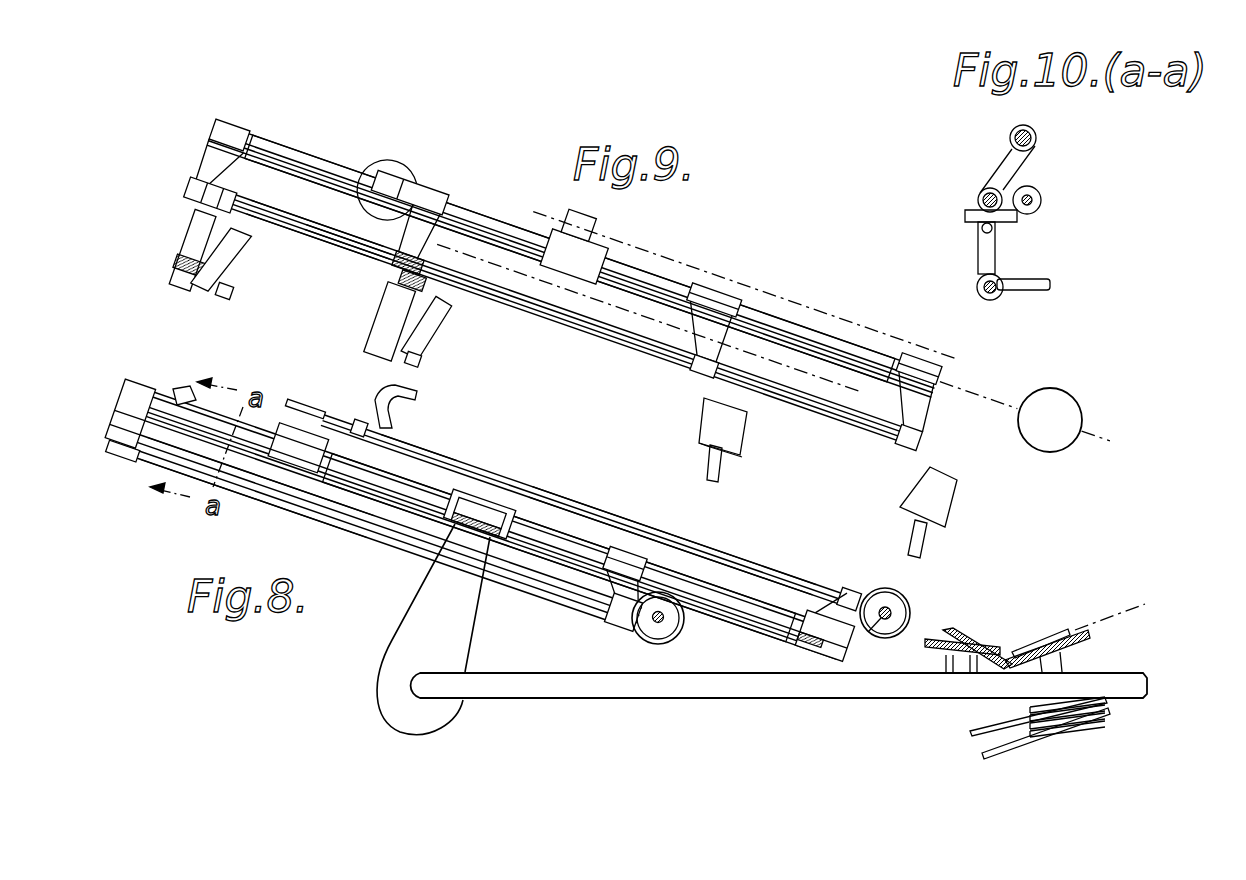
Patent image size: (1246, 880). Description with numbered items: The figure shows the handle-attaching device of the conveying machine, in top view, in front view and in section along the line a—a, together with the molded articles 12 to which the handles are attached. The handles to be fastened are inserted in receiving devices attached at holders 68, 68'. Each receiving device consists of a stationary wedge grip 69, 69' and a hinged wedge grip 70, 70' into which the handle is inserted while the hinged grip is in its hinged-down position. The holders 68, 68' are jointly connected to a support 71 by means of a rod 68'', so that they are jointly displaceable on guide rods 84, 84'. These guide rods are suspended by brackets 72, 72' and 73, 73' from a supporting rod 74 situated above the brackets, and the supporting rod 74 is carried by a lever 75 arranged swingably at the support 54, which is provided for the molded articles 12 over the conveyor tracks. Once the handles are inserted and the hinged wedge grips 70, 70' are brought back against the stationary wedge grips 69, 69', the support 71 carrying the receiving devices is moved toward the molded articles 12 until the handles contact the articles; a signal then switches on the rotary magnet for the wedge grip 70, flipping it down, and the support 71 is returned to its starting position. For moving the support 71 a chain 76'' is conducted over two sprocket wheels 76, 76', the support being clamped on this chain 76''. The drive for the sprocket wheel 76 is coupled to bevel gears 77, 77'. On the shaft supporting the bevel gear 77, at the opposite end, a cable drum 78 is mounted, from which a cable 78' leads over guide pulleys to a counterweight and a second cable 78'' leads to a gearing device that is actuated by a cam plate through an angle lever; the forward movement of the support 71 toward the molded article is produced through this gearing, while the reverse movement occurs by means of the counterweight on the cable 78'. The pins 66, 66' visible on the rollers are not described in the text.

In FIG. 8, the molded articles 12 is at (668, 632).
In FIG. 9, the molded articles 12 is at (714, 420).
In FIG. 8, the support 54 is at (633, 686).
In FIG. 8, the roller pin 66 is at (632, 641).
In FIG. 9, the roller pin 66 is at (733, 470).
In FIG. 8, the roller pin 66' is at (923, 576).
In FIG. 9, the holder 68 is at (177, 271).
In FIG. 10, the holder 68 is at (1018, 272).
In FIG. 8, the holder 68' is at (354, 395).
In FIG. 9, the holder 68' is at (377, 326).
In FIG. 8, the rod 68'' is at (105, 471).
In FIG. 9, the rod 68'' is at (315, 248).
In FIG. 10, the rod 68'' is at (1042, 212).
In FIG. 8, the stationary wedge grip 69 is at (177, 479).
In FIG. 9, the stationary wedge grip 69 is at (241, 260).
In FIG. 10, the stationary wedge grip 69 is at (963, 248).
In FIG. 8, the stationary wedge grip 69' is at (422, 444).
In FIG. 9, the stationary wedge grip 69' is at (451, 327).
In FIG. 8, the hinged wedge grip 70 is at (168, 373).
In FIG. 9, the hinged wedge grip 70 is at (686, 367).
In FIG. 10, the hinged wedge grip 70 is at (1049, 284).
In FIG. 8, the hinged wedge grip 70' is at (414, 406).
In FIG. 9, the hinged wedge grip 70' is at (452, 367).
In FIG. 9, the support 71 is at (237, 195).
In FIG. 10, the support 71 is at (1030, 197).
In FIG. 8, the bracket 72 is at (104, 413).
In FIG. 9, the bracket 72 is at (239, 136).
In FIG. 10, the bracket 72 is at (990, 167).
In FIG. 8, the bracket 72' is at (635, 560).
In FIG. 9, the bracket 72' is at (751, 322).
In FIG. 8, the bracket 73 is at (298, 485).
In FIG. 9, the bracket 73 is at (436, 203).
In FIG. 8, the bracket 73' is at (841, 638).
In FIG. 9, the bracket 73' is at (930, 380).
In FIG. 8, the supporting rod 74 is at (757, 615).
In FIG. 9, the supporting rod 74 is at (522, 240).
In FIG. 10, the supporting rod 74 is at (1036, 138).
In FIG. 8, the lever 75 is at (410, 645).
In FIG. 9, the lever 75 is at (587, 253).
In FIG. 8, the sprocket wheel 76 is at (968, 629).
In FIG. 8, the sprocket wheel 76' is at (296, 383).
In FIG. 9, the sprocket wheel 76' is at (395, 167).
In FIG. 8, the chain 76'' is at (758, 540).
In FIG. 9, the chain 76'' is at (745, 286).
In FIG. 8, the bevel gear 77 is at (1045, 636).
In FIG. 8, the bevel gear 77' is at (955, 691).
In FIG. 8, the cable drum 78 is at (1064, 737).
In FIG. 8, the cable 78' is at (1046, 743).
In FIG. 8, the cable 78'' is at (1011, 726).
In FIG. 8, the guide rod 84 is at (305, 503).
In FIG. 9, the guide rod 84 is at (348, 259).
In FIG. 10, the guide rod 84 is at (958, 201).
In FIG. 8, the guide rod 84' is at (695, 540).
In FIG. 9, the guide rod 84' is at (631, 350).